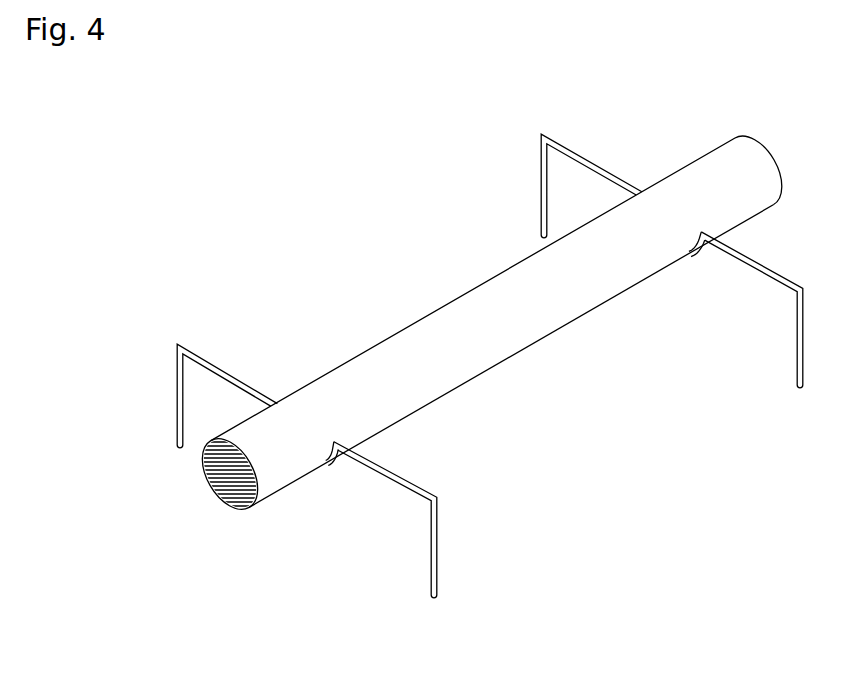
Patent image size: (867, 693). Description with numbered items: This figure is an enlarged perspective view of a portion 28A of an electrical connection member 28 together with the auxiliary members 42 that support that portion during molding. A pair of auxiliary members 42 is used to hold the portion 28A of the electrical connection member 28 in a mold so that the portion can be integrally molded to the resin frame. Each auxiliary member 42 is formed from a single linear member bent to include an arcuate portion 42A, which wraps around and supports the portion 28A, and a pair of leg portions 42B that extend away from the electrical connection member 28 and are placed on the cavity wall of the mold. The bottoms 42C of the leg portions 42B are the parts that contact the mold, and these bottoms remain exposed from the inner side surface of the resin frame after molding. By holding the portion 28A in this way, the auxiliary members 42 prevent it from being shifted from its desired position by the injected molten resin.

The electrical connection member 28 is at (368, 332).
The portion of the electrical connection member 28A is at (497, 342).
The auxiliary member 42 is at (453, 387).
The arcuate portion 42A is at (329, 464).
The leg portion 42B is at (541, 185).
The bottom of the leg portion 42C is at (541, 236).